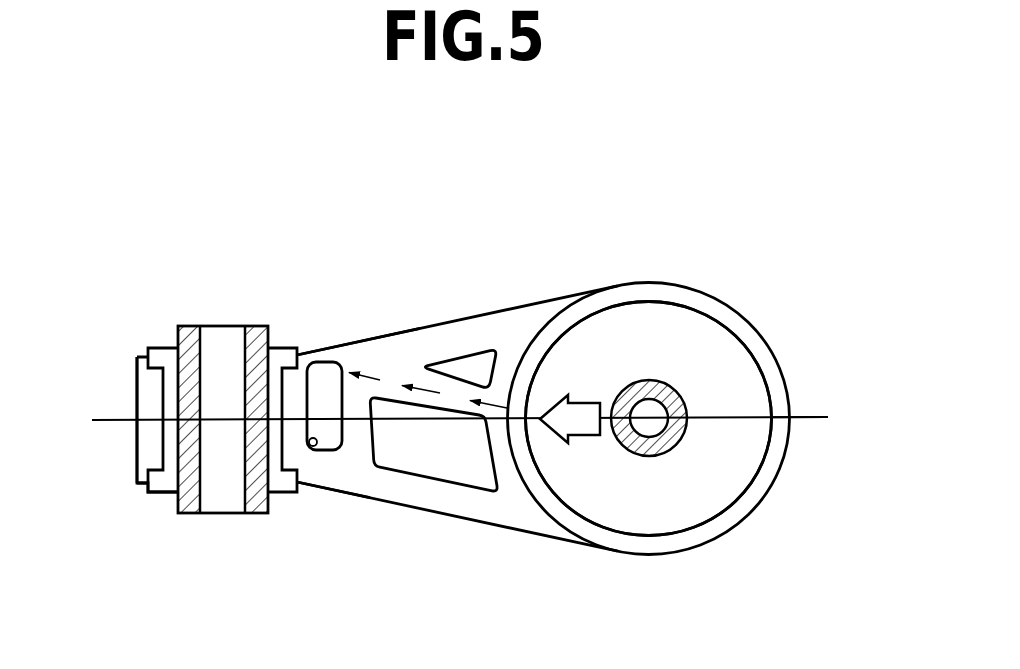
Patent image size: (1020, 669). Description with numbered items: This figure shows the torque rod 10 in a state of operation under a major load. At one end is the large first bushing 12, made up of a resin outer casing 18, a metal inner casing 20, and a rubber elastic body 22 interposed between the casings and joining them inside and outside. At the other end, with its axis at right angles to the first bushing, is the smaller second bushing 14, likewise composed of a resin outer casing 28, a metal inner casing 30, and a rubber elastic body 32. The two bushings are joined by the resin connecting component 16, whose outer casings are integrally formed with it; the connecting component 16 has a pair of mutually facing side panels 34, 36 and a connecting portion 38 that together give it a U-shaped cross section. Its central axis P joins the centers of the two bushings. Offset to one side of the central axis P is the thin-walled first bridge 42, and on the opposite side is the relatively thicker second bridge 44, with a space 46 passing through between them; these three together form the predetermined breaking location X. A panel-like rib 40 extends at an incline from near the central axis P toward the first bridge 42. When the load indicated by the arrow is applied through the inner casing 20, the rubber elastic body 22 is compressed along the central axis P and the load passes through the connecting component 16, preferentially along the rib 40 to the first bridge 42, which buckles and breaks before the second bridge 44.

The torque rod 10 is at (433, 233).
The first bushing 12 is at (713, 293).
The second bushing 14 is at (135, 382).
The resin connecting component 16 is at (417, 328).
The resin outer casing 18 is at (772, 475).
The metal inner casing 20 is at (647, 456).
The rubber elastic body 22 is at (635, 325).
The resin outer casing 28 is at (142, 443).
The metal inner casing 30 is at (192, 325).
The rubber elastic body 32 is at (167, 487).
The side panel 34 is at (465, 510).
The side panel 36 is at (472, 328).
The connecting portion 38 is at (393, 447).
The rib 40 is at (443, 400).
The first bridge 42 is at (332, 350).
The second bridge 44 is at (325, 472).
The space 46 is at (315, 446).
The predetermined breaking location X is at (315, 340).
The central axis P is at (812, 417).